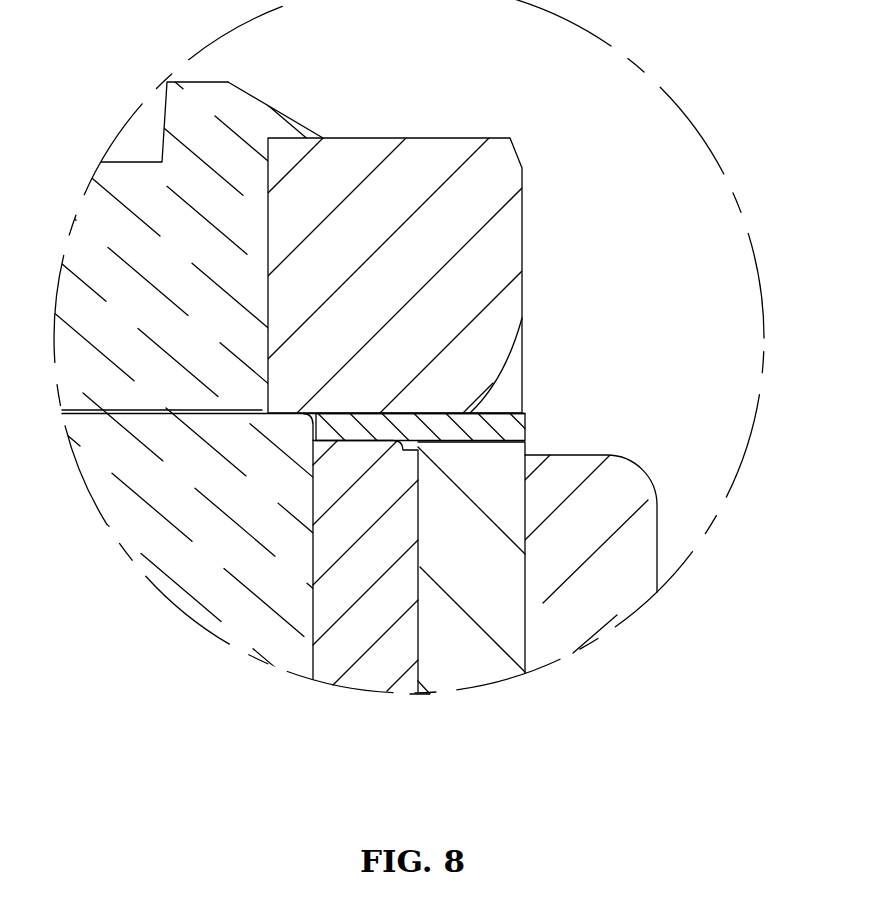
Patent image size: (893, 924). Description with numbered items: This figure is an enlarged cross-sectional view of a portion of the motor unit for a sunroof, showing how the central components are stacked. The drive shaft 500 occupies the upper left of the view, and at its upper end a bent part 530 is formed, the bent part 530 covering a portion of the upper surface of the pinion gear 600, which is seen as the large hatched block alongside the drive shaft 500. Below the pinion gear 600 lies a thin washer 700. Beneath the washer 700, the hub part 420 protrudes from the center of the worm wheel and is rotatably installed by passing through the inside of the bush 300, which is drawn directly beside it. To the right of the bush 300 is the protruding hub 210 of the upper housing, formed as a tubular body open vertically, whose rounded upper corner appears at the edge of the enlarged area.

The drive shaft 500 is at (202, 88).
The bent part 530 is at (288, 126).
The pinion gear 600 is at (447, 147).
The washer 700 is at (523, 428).
The hub part 420 is at (368, 678).
The bush 300 is at (517, 497).
The protruding hub 210 is at (647, 552).